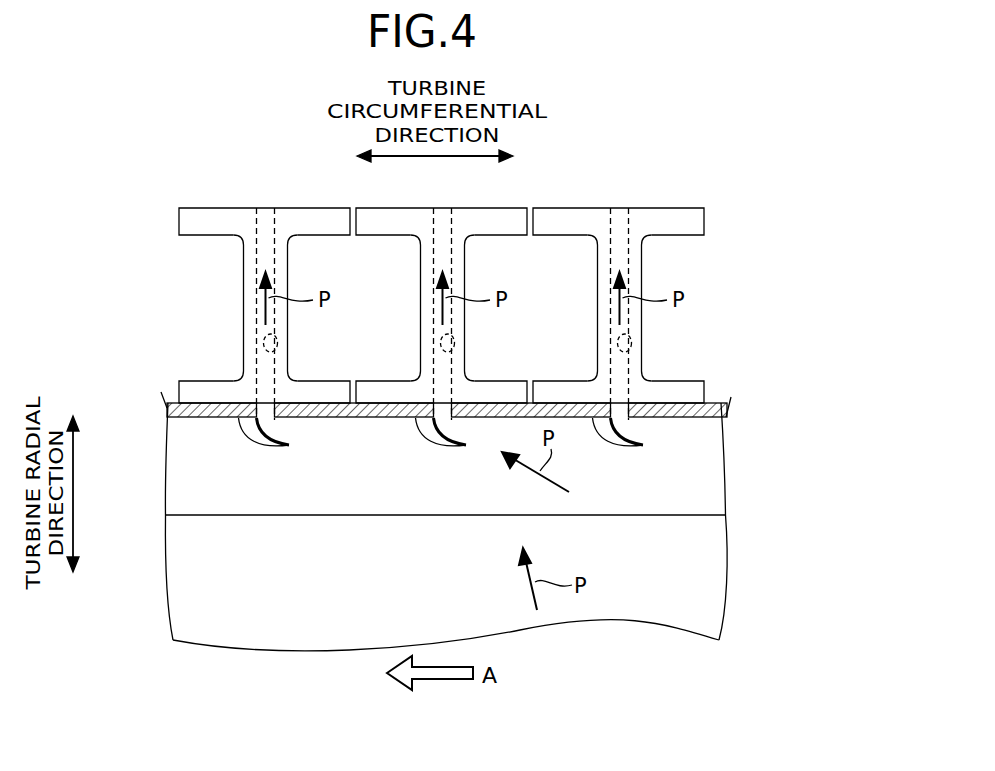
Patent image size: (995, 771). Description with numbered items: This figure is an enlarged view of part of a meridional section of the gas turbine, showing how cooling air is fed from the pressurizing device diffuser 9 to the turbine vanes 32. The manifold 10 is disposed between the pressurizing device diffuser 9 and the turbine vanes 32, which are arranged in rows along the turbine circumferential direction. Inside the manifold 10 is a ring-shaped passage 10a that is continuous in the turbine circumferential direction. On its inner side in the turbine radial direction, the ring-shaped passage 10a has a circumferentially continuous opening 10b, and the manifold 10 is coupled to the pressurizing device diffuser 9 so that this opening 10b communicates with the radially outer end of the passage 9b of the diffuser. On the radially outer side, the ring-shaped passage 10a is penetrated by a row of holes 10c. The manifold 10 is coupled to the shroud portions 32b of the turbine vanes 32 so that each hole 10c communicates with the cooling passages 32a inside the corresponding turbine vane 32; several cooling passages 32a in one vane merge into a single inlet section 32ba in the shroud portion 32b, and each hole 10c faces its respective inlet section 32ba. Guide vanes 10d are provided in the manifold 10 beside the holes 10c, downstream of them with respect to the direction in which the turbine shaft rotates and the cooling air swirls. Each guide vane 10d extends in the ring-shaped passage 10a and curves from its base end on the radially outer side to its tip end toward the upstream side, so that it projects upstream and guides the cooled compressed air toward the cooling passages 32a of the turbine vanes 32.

The pressurizing device diffuser 9 is at (729, 572).
The passage of the pressurizing device diffuser 9b is at (708, 612).
The manifold 10 is at (724, 488).
The ring-shaped passage 10a is at (700, 443).
The opening 10b is at (673, 515).
The hole 10c is at (293, 427).
The guide vane 10d is at (244, 432).
The turbine vane 32 is at (244, 272).
The cooling passage 32a is at (278, 343).
The shroud portion 32b is at (181, 216).
The inlet section 32ba is at (262, 396).